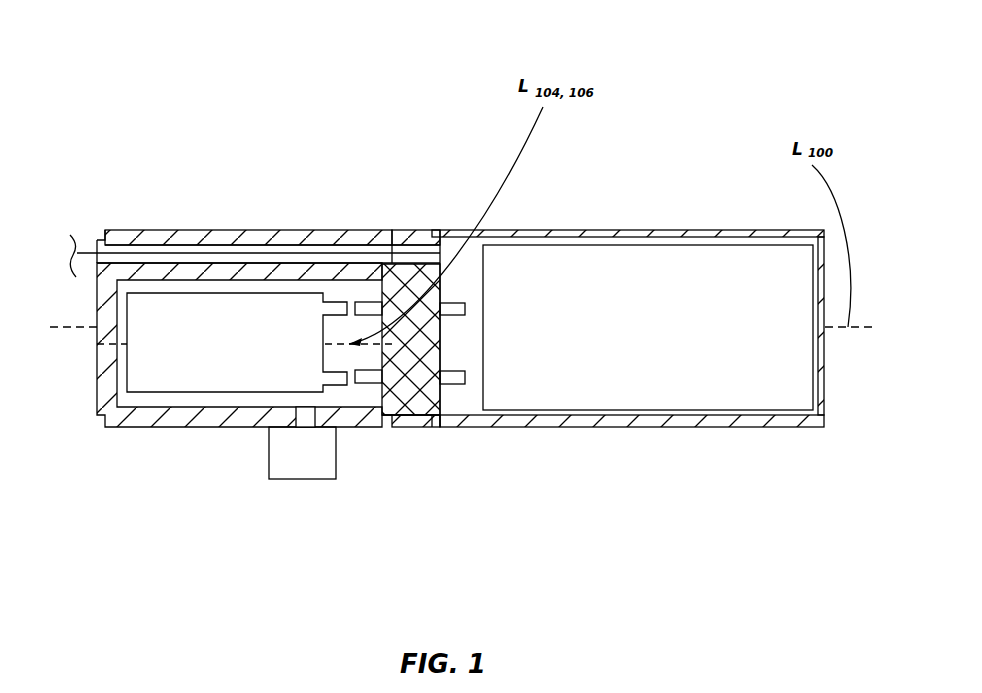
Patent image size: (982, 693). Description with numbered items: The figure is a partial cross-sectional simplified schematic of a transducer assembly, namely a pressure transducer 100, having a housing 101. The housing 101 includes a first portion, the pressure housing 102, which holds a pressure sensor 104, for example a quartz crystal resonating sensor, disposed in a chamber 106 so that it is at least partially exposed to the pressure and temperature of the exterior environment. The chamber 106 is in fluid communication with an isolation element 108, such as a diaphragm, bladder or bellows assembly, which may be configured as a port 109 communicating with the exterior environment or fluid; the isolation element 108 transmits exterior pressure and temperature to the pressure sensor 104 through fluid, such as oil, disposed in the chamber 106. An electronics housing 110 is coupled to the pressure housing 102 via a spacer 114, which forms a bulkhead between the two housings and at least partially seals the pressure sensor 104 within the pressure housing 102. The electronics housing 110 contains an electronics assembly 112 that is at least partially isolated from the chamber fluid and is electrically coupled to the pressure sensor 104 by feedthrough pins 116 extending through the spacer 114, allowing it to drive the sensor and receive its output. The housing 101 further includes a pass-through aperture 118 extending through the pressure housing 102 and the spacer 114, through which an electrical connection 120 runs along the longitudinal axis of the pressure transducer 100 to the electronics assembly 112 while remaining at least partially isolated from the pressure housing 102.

The pressure transducer 100 is at (222, 93).
The housing 101 is at (228, 207).
The pressure housing 102 is at (158, 423).
The pressure sensor 104 is at (302, 302).
The chamber 106 is at (343, 400).
The isolation element 108 is at (298, 457).
The port 109 is at (303, 417).
The electronics housing 110 is at (705, 237).
The electronics assembly 112 is at (648, 386).
The spacer 114 is at (422, 404).
The feedthrough pins 116 is at (453, 310).
The pass-through aperture 118 is at (369, 240).
The electrical connection 120 is at (427, 250).